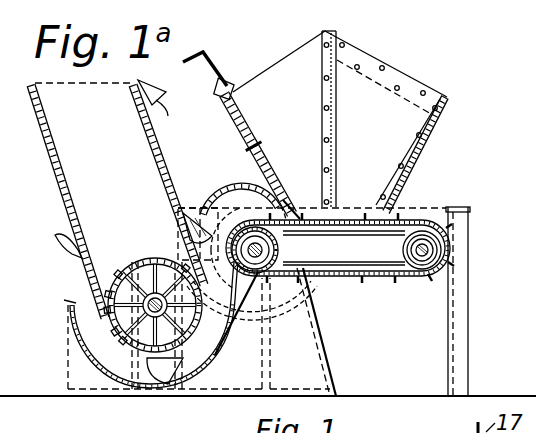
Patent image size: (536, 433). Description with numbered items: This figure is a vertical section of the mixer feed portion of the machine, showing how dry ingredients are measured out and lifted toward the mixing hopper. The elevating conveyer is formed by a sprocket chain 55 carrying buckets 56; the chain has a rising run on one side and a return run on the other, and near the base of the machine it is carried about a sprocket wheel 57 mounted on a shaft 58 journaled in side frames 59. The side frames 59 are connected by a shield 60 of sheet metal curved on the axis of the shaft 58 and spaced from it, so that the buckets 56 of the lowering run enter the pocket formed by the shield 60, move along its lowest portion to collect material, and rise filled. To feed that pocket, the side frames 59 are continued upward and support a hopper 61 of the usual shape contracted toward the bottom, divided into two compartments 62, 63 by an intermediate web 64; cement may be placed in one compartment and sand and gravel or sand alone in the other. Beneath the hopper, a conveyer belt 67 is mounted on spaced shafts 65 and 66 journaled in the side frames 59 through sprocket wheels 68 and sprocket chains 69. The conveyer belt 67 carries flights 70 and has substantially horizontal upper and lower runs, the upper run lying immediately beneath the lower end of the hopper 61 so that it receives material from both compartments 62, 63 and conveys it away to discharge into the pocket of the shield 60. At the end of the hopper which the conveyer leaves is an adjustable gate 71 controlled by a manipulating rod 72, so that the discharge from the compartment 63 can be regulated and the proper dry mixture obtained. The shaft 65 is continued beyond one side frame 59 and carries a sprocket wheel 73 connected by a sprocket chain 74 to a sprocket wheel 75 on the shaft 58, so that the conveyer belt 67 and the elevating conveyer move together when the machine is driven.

The sprocket chain 55 is at (60, 132).
The buckets 56 is at (168, 114).
The sprocket wheel 57 is at (120, 265).
The shaft 58 is at (128, 344).
The side frames 59 is at (236, 360).
The shield 60 is at (197, 378).
The hopper 61 is at (425, 148).
The compartment 62 is at (386, 80).
The compartment 63 is at (279, 72).
The intermediate web 64 is at (337, 152).
The shaft 65 is at (254, 257).
The shaft 66 is at (424, 262).
The conveyer belt 67 is at (360, 283).
The sprocket wheels 68 is at (476, 232).
The sprocket chains 69 is at (386, 250).
The flights 70 is at (344, 281).
The adjustable gate 71 is at (274, 188).
The manipulating rod 72 is at (245, 118).
The sprocket wheel 73 is at (248, 187).
The sprocket chain 74 is at (232, 205).
The sprocket wheel 75 is at (168, 259).